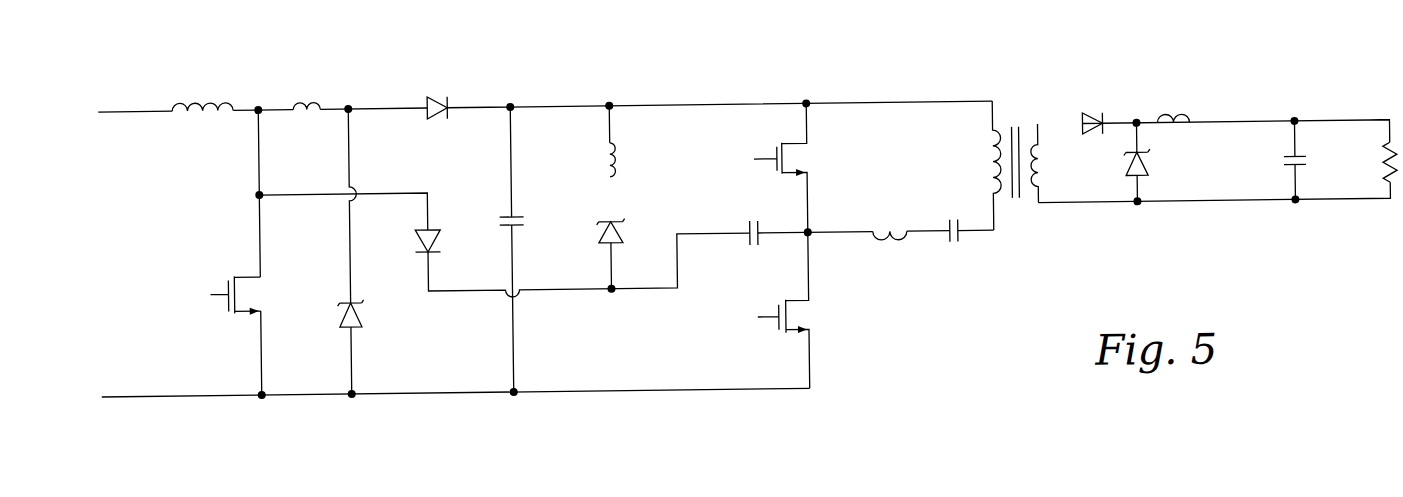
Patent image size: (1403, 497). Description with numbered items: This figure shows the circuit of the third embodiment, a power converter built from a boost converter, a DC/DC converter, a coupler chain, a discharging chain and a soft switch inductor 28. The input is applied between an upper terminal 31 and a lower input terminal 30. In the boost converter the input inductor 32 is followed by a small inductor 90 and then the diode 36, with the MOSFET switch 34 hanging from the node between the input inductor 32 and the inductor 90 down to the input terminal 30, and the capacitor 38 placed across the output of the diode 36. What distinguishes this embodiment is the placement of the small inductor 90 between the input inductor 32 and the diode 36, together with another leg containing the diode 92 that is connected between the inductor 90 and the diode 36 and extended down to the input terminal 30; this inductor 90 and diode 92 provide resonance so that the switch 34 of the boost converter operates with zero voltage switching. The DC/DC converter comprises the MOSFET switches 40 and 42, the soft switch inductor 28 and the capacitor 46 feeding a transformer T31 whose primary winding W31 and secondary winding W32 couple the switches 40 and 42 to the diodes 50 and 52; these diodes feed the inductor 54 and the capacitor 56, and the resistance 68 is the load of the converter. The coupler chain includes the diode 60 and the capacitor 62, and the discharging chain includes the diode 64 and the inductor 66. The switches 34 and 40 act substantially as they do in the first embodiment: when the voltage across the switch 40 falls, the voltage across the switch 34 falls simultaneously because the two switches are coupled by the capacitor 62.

The soft switch inductor 28 is at (898, 242).
The input terminal 30 is at (165, 393).
The positive input rail 31 is at (147, 108).
The input inductor 32 is at (212, 100).
The MOSFET switch 34 is at (262, 293).
The diode 36 is at (439, 96).
The capacitor 38 is at (520, 227).
The MOSFET switch 40 is at (810, 319).
The MOSFET switch 42 is at (796, 162).
The capacitor 46 is at (955, 249).
The diode 50 is at (1097, 122).
The diode 52 is at (1150, 175).
The inductor 54 is at (1186, 123).
The capacitor 56 is at (1290, 160).
The diode 60 is at (441, 238).
The capacitor 62 is at (750, 248).
The diode 64 is at (622, 233).
The inductor 66 is at (609, 163).
The resistance 68 is at (1386, 168).
The small inductor 90 is at (318, 100).
The diode 92 is at (362, 309).
The transformer T31 is at (1016, 126).
The transformer primary winding W31 is at (994, 165).
The transformer secondary winding W32 is at (1041, 172).